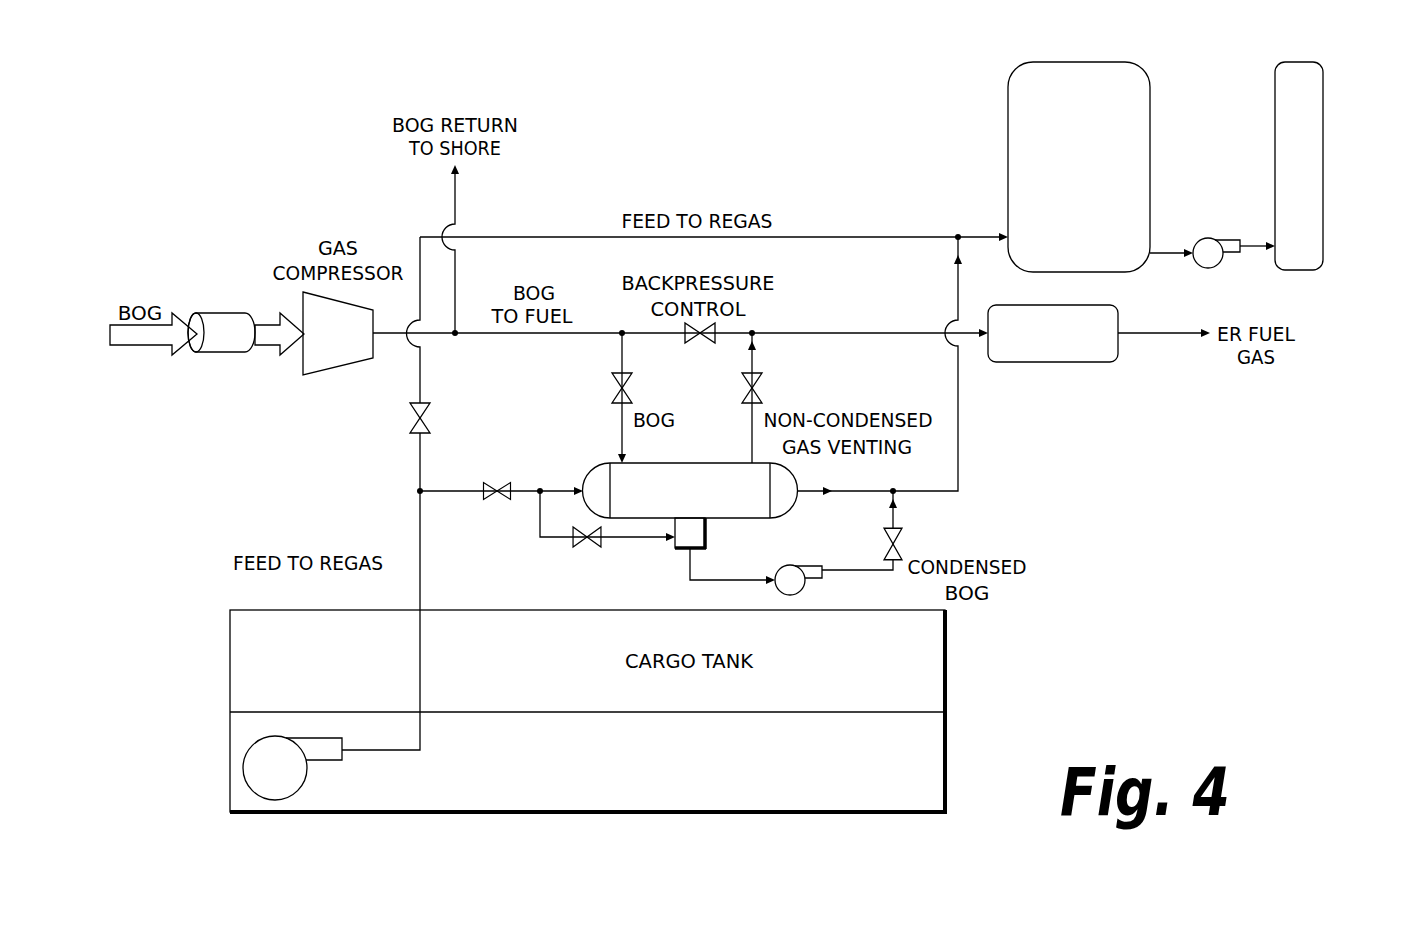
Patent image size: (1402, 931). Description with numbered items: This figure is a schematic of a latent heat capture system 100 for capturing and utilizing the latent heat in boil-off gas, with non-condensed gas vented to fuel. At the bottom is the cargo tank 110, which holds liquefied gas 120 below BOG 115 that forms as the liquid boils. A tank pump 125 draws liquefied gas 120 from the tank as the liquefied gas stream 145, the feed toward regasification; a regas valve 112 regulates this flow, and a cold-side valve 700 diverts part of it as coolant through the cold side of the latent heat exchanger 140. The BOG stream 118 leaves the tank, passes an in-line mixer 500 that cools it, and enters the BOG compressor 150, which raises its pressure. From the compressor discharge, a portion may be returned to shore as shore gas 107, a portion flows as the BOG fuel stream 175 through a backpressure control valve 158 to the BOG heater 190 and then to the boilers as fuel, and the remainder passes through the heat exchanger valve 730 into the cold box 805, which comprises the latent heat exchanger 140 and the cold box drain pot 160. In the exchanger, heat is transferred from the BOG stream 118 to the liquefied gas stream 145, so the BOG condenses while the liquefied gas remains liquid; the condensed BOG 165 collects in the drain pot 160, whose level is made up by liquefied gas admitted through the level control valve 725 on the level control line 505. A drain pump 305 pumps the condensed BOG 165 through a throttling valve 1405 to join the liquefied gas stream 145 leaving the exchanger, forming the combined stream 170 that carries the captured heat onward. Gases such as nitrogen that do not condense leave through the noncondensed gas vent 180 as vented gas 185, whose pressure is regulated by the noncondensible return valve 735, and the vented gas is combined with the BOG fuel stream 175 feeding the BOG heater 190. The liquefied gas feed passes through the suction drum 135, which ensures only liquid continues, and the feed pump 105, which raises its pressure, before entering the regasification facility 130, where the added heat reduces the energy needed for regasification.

The latent heat capture system 100 is at (248, 136).
The in-line mixer 500 is at (215, 313).
The BOG compressor 150 is at (322, 344).
The shore gas 107 is at (455, 200).
The liquefied gas stream 145 is at (535, 237).
The BOG fuel stream 175 is at (597, 332).
The backpressure control valve 158 is at (701, 344).
The heat exchanger valve 730 is at (613, 390).
The BOG stream 118 is at (622, 432).
The noncondensed gas vent 180 is at (750, 462).
The vented gas 185 is at (754, 363).
The noncondensible return valve 735 is at (762, 392).
The regas valve 112 is at (431, 418).
The cold-side valve 700 is at (500, 482).
The level control valve 725 is at (585, 548).
The level control line 505 is at (630, 538).
The latent heat exchanger 140 is at (740, 518).
The cold box drain pot 160 is at (707, 536).
The cold box 805 is at (723, 512).
The condensed BOG 165 is at (893, 520).
The throttling valve 1405 is at (903, 543).
The drain pump 305 is at (802, 592).
The combined stream 170 is at (960, 418).
The suction drum 135 is at (1153, 135).
The feed pump 105 is at (1205, 238).
The regasification facility 130 is at (1300, 272).
The BOG heater 190 is at (1089, 364).
The cargo tank 110 is at (945, 712).
The BOG 115 is at (848, 671).
The liquefied gas 120 is at (848, 769).
The tank pump 125 is at (245, 776).